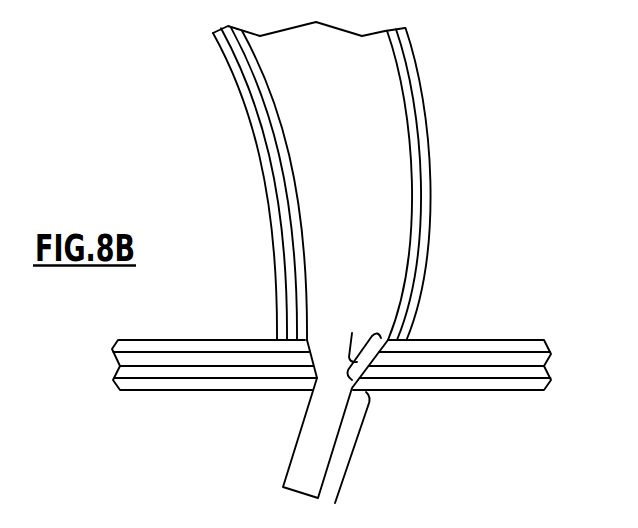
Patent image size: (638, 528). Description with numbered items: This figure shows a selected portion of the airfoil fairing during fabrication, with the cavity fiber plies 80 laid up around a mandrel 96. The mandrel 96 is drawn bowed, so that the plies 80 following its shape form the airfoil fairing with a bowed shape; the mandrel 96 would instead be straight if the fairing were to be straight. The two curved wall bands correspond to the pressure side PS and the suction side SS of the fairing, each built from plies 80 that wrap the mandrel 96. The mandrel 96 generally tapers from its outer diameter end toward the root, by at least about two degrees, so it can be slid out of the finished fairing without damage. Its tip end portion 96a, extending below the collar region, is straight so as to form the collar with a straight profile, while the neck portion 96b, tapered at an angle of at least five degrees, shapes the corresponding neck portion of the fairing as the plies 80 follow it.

The cavity fiber plies 80 is at (416, 275).
The mandrels 96 is at (303, 224).
The tip end portions 96a is at (352, 455).
The neck portions 96b is at (364, 290).
The suction side SS is at (443, 65).
The pressure side PS is at (245, 178).